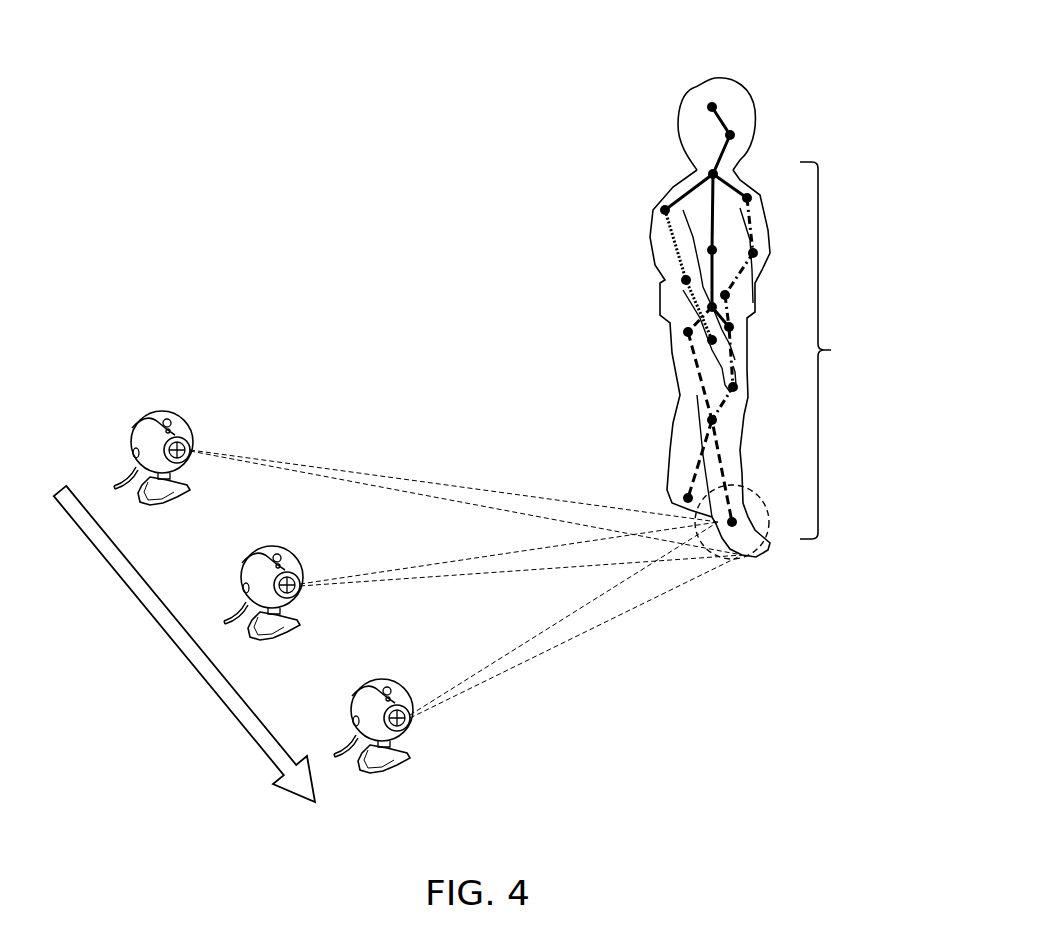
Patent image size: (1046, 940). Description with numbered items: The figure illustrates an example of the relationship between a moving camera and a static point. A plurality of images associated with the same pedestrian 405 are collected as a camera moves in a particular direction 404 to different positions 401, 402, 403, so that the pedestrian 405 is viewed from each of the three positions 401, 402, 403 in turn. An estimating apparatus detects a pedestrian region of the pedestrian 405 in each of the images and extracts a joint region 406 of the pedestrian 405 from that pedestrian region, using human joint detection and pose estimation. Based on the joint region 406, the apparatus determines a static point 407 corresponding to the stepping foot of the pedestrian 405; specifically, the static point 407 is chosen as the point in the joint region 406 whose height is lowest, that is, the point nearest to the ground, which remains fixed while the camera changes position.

The camera position 401 is at (166, 412).
The camera position 402 is at (276, 547).
The camera position 403 is at (387, 680).
The moving direction 404 is at (167, 638).
The pedestrian 405 is at (783, 72).
The joint region 406 is at (835, 350).
The static point 407 is at (765, 500).